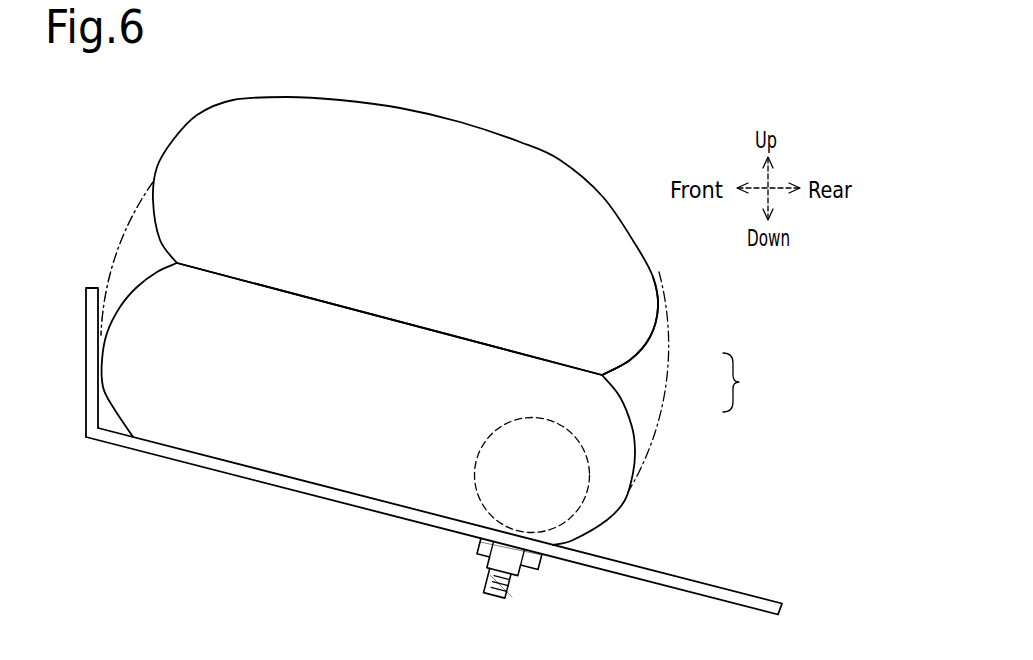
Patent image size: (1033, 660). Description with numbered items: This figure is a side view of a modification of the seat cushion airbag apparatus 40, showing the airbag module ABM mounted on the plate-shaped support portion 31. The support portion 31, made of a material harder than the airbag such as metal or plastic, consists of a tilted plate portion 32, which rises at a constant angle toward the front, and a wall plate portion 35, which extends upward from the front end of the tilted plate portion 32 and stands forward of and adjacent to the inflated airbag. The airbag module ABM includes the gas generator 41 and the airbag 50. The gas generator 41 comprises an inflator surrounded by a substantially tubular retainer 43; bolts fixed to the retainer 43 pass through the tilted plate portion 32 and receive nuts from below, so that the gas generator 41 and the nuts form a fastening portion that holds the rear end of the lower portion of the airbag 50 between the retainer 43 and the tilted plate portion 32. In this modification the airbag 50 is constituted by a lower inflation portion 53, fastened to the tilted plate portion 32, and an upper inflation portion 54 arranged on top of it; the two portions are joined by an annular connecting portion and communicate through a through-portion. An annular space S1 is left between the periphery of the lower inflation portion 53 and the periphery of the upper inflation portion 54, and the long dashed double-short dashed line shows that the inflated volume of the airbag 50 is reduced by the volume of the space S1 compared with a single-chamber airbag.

The airbag apparatus 40 is at (198, 116).
The gas generator 41 is at (513, 416).
The retainer 43 is at (587, 497).
The airbag 50 is at (147, 183).
The lower inflation portion 53 is at (622, 397).
The upper inflation portion 54 is at (637, 353).
The support portion 31 is at (128, 497).
The tilted plate portion 32 is at (125, 442).
The wall plate portion 35 is at (92, 409).
The space S1 is at (138, 247).
The airbag module ABM is at (756, 493).